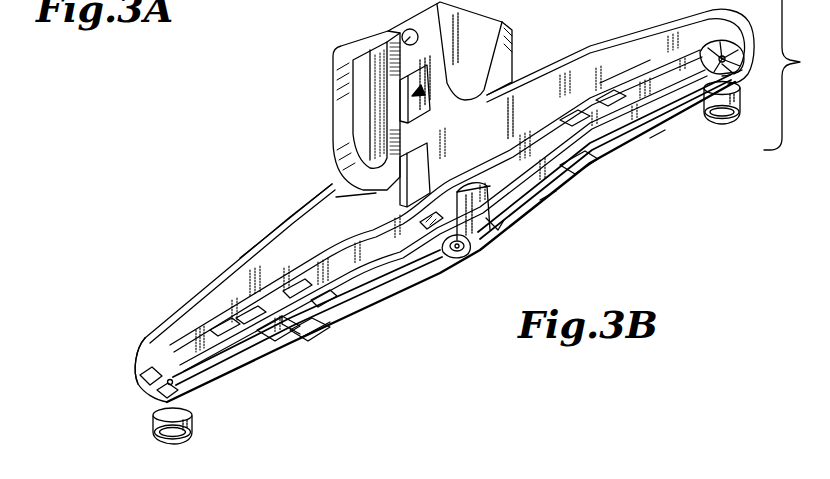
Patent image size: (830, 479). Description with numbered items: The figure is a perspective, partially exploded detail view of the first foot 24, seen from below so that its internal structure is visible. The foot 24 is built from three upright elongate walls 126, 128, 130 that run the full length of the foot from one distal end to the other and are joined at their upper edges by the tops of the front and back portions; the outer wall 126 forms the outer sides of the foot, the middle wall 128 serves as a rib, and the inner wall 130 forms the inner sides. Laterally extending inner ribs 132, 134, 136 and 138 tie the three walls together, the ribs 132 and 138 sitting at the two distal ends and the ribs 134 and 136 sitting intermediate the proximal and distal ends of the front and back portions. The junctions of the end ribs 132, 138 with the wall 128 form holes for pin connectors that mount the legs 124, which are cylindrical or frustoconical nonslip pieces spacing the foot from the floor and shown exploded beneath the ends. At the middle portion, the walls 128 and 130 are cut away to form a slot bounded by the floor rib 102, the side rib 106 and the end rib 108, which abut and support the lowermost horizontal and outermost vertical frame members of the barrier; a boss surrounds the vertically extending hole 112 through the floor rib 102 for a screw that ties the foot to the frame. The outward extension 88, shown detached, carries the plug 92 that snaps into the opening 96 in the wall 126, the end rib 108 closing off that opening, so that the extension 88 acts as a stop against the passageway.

The first foot 24 is at (278, 226).
The outward extension 88 is at (330, 92).
The plug 92 is at (376, 193).
The opening 96 is at (420, 170).
The floor rib 102 is at (500, 230).
The side rib 106 is at (496, 210).
The end rib 108 is at (420, 86).
The vertically extending hole 112 is at (468, 256).
The leg 124 is at (704, 114).
The upright elongate wall 126 is at (200, 344).
The upright elongate wall 128 is at (264, 330).
The upright elongate wall 130 is at (313, 328).
The lateral rib 132 is at (158, 368).
The lateral rib 134 is at (266, 300).
The lateral rib 136 is at (585, 171).
The lateral rib 138 is at (698, 48).